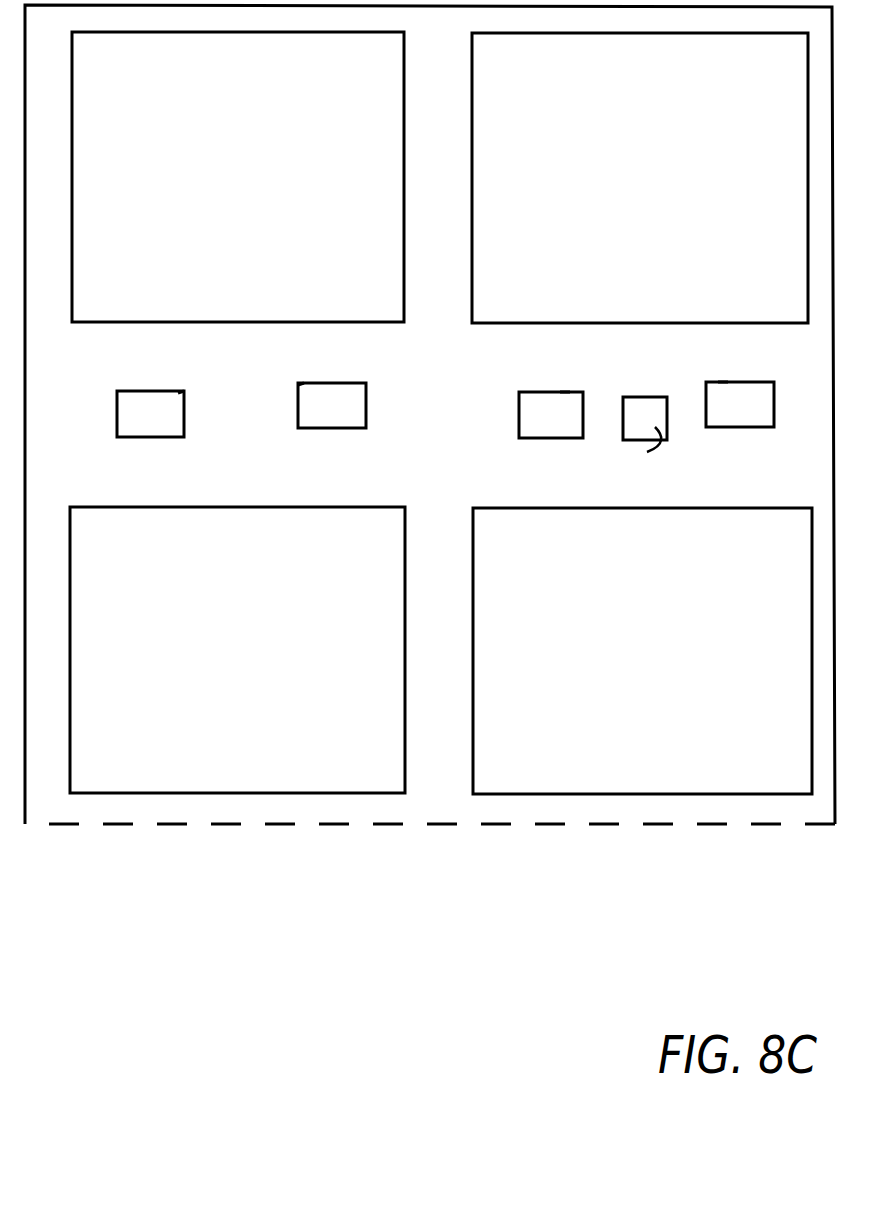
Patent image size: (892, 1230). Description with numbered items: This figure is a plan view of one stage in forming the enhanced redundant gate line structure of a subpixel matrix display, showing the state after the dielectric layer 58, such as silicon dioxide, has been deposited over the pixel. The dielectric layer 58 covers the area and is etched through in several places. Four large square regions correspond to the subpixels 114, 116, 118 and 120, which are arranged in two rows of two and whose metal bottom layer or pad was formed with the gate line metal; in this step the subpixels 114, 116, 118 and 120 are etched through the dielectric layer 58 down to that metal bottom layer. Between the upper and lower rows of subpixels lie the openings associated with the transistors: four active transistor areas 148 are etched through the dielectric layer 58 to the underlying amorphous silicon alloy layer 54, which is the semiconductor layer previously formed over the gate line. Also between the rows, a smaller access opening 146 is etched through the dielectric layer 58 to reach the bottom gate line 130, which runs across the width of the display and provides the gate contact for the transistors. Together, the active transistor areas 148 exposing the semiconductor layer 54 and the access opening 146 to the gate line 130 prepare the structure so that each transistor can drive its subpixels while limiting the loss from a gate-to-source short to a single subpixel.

The dielectric layer 58 is at (465, 427).
The subpixel 114 is at (284, 218).
The subpixel 116 is at (670, 224).
The subpixel 118 is at (265, 680).
The subpixel 120 is at (670, 680).
The amorphous silicon alloy layer 54 is at (322, 417).
The active transistor areas 148 is at (300, 385).
The access opening 146 is at (652, 397).
The bottom gate line 130 is at (634, 448).